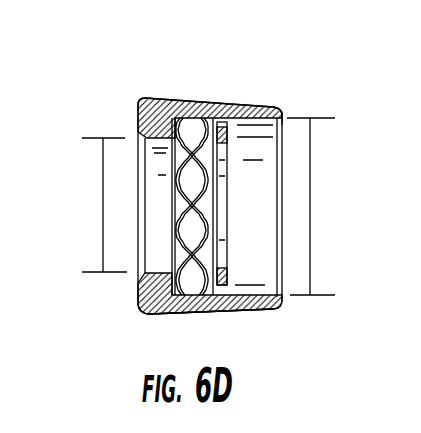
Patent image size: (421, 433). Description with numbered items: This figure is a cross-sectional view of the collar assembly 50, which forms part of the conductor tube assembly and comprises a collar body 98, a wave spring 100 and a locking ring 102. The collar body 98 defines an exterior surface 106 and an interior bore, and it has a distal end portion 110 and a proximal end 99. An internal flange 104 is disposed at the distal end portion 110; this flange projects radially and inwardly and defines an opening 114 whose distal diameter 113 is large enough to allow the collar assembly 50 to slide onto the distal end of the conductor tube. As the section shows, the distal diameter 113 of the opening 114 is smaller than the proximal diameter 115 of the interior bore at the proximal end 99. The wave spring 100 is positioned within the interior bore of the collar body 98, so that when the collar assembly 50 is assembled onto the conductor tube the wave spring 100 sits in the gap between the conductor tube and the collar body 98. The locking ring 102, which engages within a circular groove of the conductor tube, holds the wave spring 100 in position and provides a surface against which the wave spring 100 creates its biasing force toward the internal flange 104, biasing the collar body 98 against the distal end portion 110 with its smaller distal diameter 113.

The collar assembly 50 is at (128, 100).
The collar body 98 is at (155, 98).
The wave spring 100 is at (192, 117).
The exterior surface 106 is at (207, 117).
The locking ring 102 is at (224, 131).
The proximal end 99 is at (298, 106).
The proximal diameter 115 is at (313, 212).
The distal diameter 113 is at (102, 177).
The opening 114 is at (145, 216).
The internal flange 104 is at (143, 281).
The distal end portion 110 is at (137, 303).